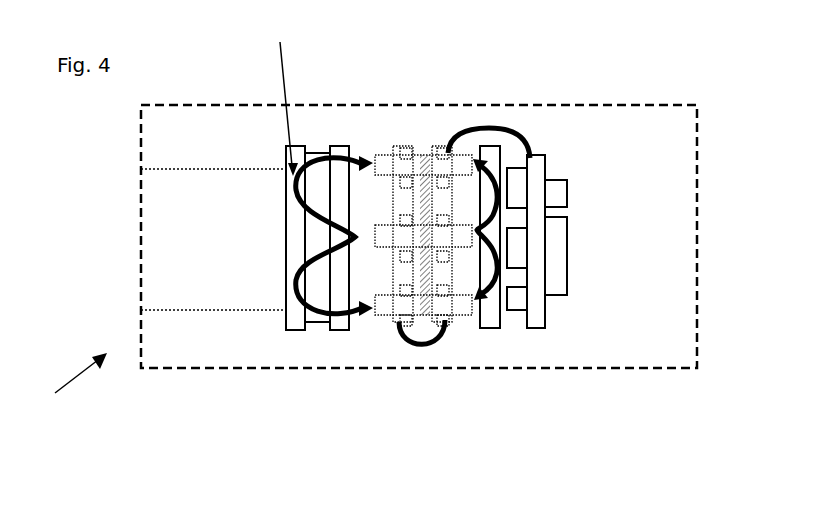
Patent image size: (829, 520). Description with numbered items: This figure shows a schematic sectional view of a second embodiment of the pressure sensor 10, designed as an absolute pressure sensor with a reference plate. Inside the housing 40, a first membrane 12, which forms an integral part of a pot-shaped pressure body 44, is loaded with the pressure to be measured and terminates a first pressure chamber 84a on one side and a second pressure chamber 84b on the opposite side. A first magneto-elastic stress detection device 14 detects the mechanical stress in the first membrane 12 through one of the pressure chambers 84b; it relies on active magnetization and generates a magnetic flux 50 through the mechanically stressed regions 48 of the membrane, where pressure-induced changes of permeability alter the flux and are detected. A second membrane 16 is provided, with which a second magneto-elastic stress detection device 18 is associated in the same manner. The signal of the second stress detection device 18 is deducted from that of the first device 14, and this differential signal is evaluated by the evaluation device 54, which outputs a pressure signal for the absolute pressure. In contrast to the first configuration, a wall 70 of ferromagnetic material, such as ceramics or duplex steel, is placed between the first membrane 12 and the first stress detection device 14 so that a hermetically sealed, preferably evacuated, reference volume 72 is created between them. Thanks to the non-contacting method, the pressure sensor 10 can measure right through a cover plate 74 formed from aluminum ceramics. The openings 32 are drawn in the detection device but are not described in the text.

The pressure sensor 10 is at (64, 381).
The first membrane 12 is at (296, 320).
The first magneto-elastic stress detection device 14 is at (409, 130).
The second membrane 16 is at (498, 148).
The second magneto-elastic stress detection device 18 is at (452, 132).
The openings 32 is at (405, 258).
The housing 40 is at (647, 105).
The pot-shaped pressure body 44 is at (193, 177).
The mechanically stressed regions 48 is at (277, 99).
The magnetic flux 50 is at (294, 196).
The evaluation device 54 is at (538, 308).
The wall 70 is at (345, 318).
The reference volume 72 is at (316, 153).
The cover plate 74 is at (339, 152).
The first pressure chamber 84a is at (188, 293).
The second pressure chamber 84b is at (315, 310).